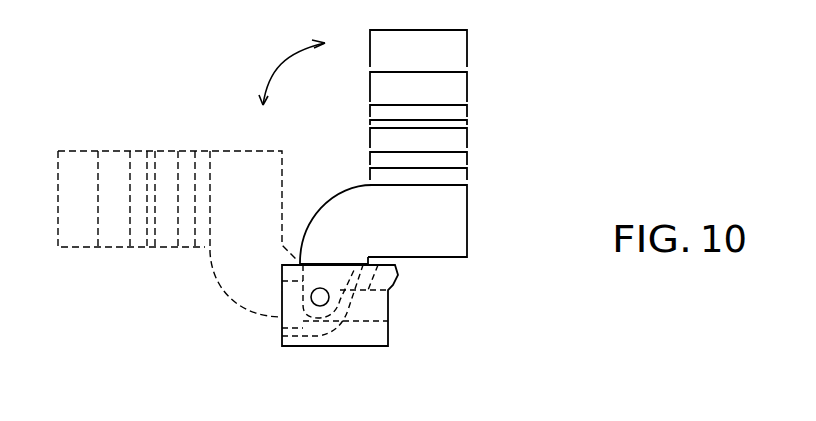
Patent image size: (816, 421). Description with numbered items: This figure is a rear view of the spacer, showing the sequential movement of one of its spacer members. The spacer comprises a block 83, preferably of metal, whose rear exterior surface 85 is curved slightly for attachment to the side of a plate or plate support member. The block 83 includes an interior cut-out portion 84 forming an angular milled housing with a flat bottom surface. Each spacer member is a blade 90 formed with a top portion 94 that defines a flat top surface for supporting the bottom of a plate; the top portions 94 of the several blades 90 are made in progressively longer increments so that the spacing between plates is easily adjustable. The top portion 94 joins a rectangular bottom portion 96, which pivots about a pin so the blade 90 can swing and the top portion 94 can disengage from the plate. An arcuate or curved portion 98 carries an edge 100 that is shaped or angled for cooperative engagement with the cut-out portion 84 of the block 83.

The block 83 is at (370, 335).
The cut-out portion 84 is at (356, 280).
The rear exterior surface 85 is at (393, 289).
The blade 90 is at (457, 55).
The top portion 94 is at (467, 250).
The bottom portion 96 is at (325, 235).
The arcuate portion 98 is at (347, 192).
The edge 100 is at (353, 298).